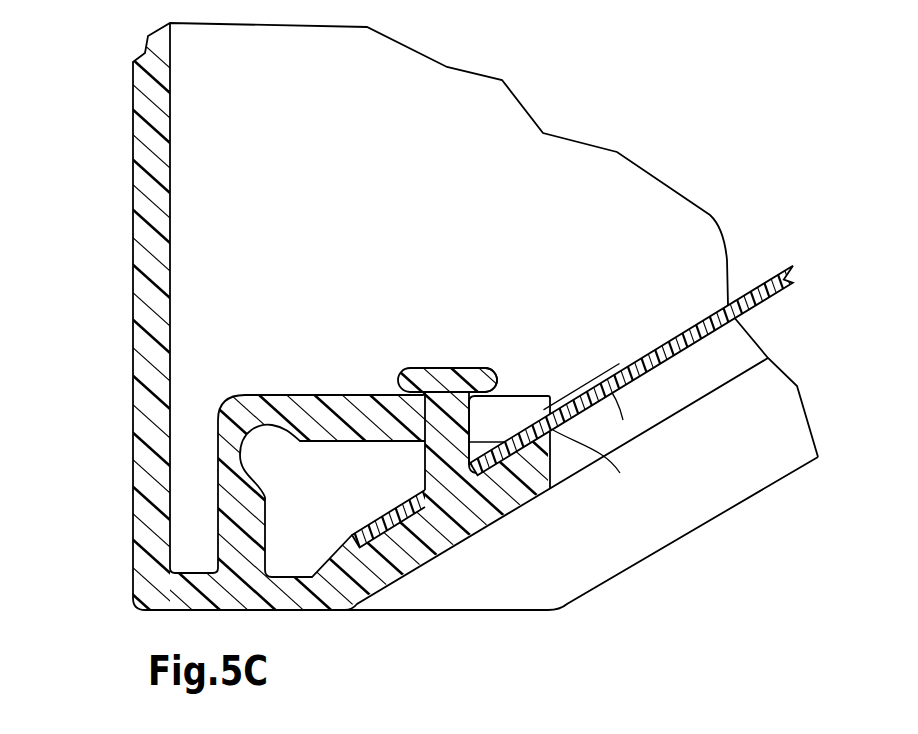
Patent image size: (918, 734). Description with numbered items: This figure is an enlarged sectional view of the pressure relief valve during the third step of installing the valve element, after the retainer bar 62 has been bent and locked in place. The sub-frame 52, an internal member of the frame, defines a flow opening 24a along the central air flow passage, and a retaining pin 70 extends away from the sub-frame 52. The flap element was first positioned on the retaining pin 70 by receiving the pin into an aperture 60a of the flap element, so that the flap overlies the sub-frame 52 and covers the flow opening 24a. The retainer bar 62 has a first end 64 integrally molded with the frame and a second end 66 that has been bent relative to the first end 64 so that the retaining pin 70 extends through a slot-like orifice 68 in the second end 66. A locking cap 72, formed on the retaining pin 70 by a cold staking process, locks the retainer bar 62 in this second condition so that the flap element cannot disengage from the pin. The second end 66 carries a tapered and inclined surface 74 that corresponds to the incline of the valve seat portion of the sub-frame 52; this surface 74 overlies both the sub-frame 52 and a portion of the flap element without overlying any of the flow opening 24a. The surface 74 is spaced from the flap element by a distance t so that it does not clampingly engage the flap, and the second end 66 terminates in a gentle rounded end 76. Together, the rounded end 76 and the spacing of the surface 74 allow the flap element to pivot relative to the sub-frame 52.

The flow opening 24a is at (686, 404).
The sub-frame 52 is at (468, 520).
The aperture of the flap element 60a is at (422, 497).
The retainer bar 62 is at (324, 384).
The first end 64 is at (237, 515).
The second end 66 is at (530, 397).
The slot-like orifice 68 is at (502, 392).
The retaining pin 70 is at (440, 367).
The locking cap 72 is at (481, 377).
The tapered and inclined surface 74 is at (596, 462).
The rounded end 76 is at (555, 397).
The distance t is at (600, 360).